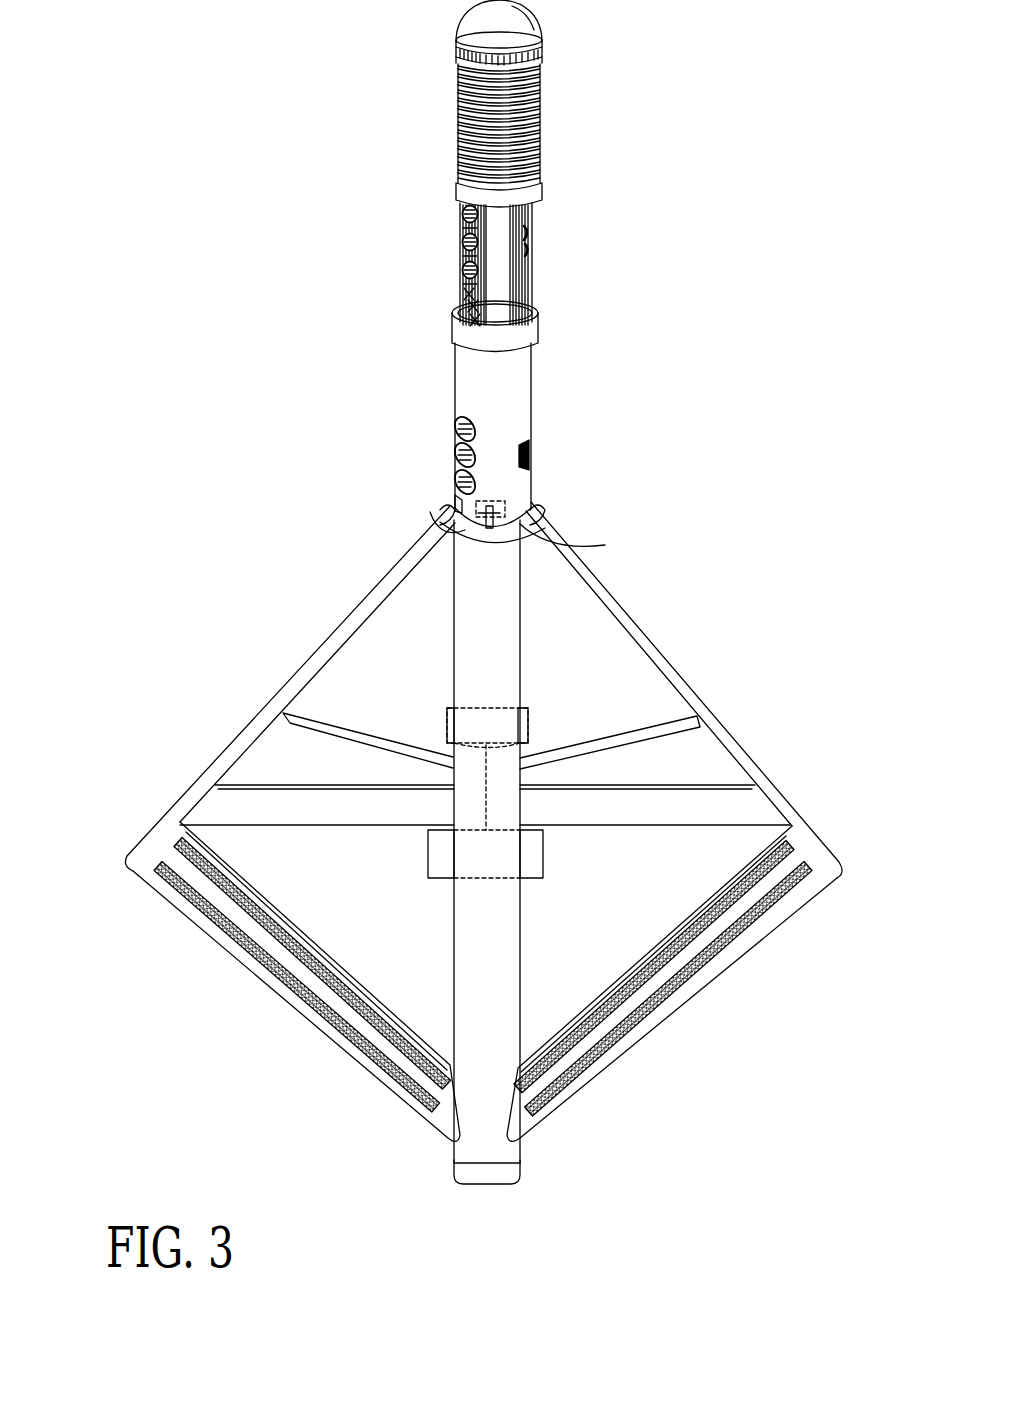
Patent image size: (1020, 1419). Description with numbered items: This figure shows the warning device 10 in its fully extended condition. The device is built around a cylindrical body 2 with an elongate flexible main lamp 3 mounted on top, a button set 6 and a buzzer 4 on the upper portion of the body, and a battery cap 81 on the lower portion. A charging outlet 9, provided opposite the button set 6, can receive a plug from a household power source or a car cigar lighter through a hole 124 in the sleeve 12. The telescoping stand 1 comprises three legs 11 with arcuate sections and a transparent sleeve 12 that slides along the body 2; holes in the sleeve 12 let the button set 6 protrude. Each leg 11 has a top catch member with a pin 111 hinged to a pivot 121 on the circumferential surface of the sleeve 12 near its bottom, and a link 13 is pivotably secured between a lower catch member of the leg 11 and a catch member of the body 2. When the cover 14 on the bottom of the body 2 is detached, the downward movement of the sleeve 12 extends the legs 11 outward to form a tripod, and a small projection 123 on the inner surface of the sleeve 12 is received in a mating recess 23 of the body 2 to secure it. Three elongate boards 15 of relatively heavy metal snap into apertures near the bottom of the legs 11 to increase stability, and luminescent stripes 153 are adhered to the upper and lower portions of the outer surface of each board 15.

The telescoping stand 1 is at (735, 731).
The body 2 is at (549, 205).
The main lamp 3 is at (552, 102).
The buzzer 4 is at (468, 297).
The button set 6 is at (447, 222).
The charging outlet 9 is at (532, 236).
The warning device 10 is at (640, 205).
The leg 11 is at (322, 652).
The sleeve 12 is at (512, 400).
The link 13 is at (362, 738).
The cover 14 is at (532, 866).
The elongate board 15 is at (315, 818).
The mating recess 23 is at (458, 480).
The battery cap 81 is at (532, 710).
The pin 111 is at (533, 488).
The pivot 121 is at (522, 507).
The small projection 123 is at (452, 512).
The hole 124 is at (532, 452).
The luminescent stripe 153 is at (312, 1022).